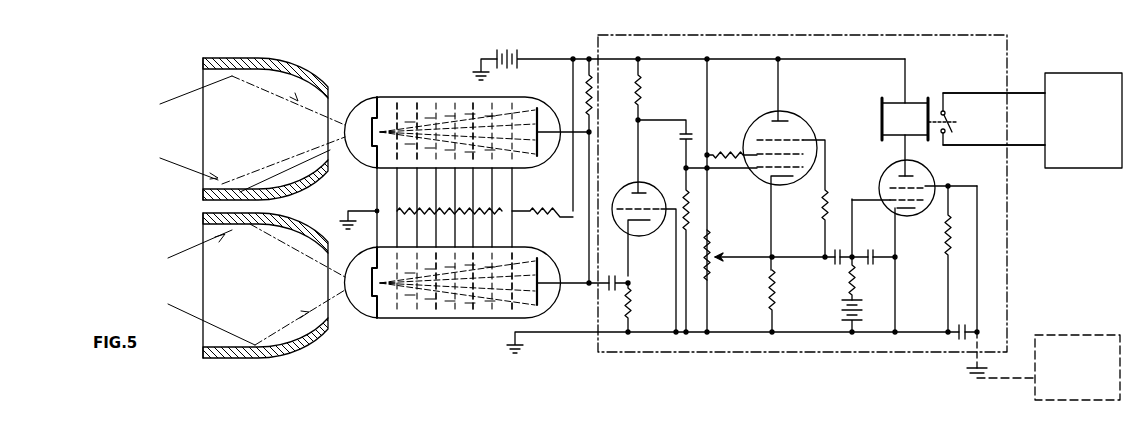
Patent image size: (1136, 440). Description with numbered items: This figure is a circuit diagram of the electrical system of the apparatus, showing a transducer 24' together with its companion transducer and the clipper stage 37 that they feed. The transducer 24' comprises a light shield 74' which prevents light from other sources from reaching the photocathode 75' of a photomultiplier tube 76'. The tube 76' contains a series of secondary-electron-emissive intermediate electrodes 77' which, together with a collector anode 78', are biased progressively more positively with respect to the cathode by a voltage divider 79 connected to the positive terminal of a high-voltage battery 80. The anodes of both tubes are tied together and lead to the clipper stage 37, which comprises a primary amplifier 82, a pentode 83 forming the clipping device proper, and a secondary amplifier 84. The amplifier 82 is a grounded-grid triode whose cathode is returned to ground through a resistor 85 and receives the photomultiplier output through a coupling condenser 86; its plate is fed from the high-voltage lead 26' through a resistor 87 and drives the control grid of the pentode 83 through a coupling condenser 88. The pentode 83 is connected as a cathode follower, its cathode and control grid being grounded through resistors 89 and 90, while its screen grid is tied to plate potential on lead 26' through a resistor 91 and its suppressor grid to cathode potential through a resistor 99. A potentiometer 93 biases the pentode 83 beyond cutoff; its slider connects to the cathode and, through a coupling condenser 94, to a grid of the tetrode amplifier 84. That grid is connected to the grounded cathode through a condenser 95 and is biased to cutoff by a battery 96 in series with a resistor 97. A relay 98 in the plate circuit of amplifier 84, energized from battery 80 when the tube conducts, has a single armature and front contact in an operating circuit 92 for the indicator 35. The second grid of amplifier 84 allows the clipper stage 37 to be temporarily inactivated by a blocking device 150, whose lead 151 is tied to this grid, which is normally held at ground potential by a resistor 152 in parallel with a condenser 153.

The light shield 74' is at (252, 116).
The transducer 24' is at (462, 114).
The photocathode 75' is at (376, 119).
The photomultiplier tube 76' is at (403, 116).
The secondary-electron-emissive intermediate electrodes 77' is at (445, 115).
The collector anode 78' is at (563, 120).
The voltage divider 79 is at (459, 208).
The high-voltage battery 80 is at (507, 55).
The high-voltage lead 26' is at (738, 38).
The clipper stage 37 is at (712, 43).
The primary amplifier 82 is at (624, 195).
The pentode 83 is at (757, 176).
The secondary amplifier 84 is at (882, 190).
The resistor 85 is at (633, 302).
The coupling condenser 86 is at (610, 280).
The resistor 87 is at (634, 90).
The coupling condenser 88 is at (680, 137).
The resistor 89 is at (778, 292).
The resistor 90 is at (683, 195).
The resistor 91 is at (731, 152).
The operating circuit 92 is at (1036, 143).
The potentiometer 93 is at (711, 276).
The coupling condenser 94 is at (838, 249).
The condenser 95 is at (870, 249).
The battery 96 is at (842, 318).
The resistor 97 is at (847, 279).
The relay 98 is at (882, 122).
The resistor 99 is at (822, 206).
The indicator 35 is at (1090, 161).
The blocking device 150 is at (1068, 343).
The lead 151 is at (1012, 384).
The resistor 152 is at (944, 240).
The condenser 153 is at (960, 322).